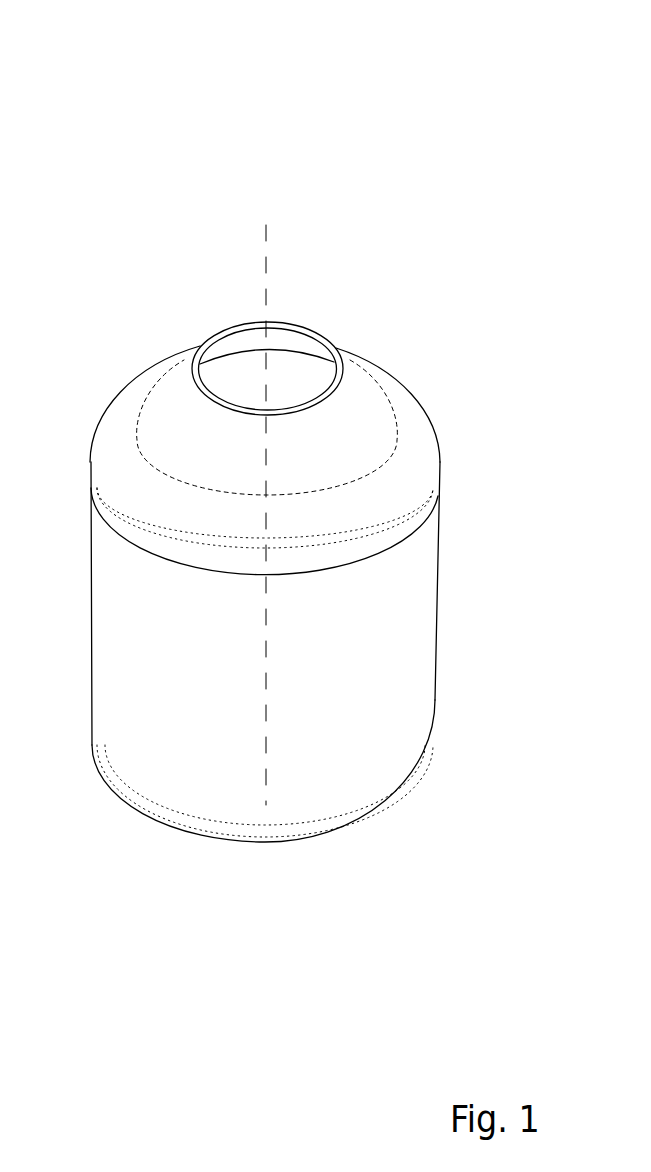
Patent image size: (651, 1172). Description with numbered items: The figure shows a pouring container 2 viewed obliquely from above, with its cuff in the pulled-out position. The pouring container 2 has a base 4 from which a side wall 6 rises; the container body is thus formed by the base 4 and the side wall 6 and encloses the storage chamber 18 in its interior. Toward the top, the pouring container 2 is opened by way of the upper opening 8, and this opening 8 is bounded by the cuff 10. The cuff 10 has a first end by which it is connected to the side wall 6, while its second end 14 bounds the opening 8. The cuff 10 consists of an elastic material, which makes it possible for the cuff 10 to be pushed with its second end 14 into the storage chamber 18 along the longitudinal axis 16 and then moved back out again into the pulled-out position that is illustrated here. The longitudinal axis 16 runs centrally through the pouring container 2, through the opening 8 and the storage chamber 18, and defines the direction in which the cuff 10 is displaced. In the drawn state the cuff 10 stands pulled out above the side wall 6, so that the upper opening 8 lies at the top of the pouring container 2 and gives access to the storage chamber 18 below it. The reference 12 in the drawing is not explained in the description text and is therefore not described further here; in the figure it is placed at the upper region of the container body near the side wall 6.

The pouring container 2 is at (310, 130).
The base 4 is at (272, 872).
The side wall 6 is at (288, 645).
The upper opening 8 is at (148, 218).
The cuff 10 is at (148, 417).
The cylindrical sidewall 12 is at (403, 527).
The second end of the cuff 14 is at (304, 316).
The longitudinal axis 16 is at (270, 265).
The storage chamber 18 is at (309, 391).